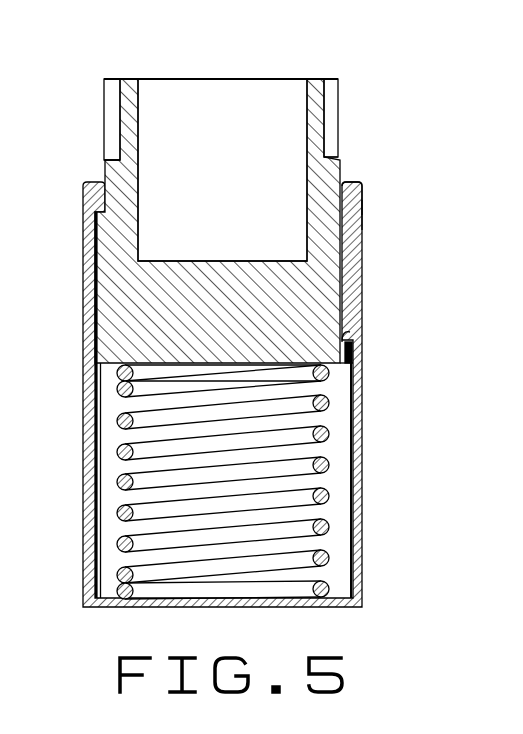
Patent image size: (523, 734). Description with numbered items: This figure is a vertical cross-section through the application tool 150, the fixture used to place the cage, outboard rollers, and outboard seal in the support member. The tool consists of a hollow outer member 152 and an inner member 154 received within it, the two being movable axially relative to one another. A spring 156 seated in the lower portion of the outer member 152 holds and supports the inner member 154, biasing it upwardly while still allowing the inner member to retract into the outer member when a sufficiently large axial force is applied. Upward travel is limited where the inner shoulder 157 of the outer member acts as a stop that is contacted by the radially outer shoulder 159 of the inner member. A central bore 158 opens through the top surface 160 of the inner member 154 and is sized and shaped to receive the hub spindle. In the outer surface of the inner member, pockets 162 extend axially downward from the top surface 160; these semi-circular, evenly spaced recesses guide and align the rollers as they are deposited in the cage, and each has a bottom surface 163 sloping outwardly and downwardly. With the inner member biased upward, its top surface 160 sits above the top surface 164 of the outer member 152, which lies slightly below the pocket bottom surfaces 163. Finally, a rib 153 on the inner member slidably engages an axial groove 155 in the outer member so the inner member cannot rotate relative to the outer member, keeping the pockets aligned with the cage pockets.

The application tool 150 is at (374, 211).
The outer member 152 is at (362, 270).
The rib 153 is at (84, 243).
The inner member 154 is at (314, 76).
The groove 155 is at (95, 417).
The spring 156 is at (297, 410).
The inner shoulder 157 is at (352, 364).
The central bore 158 is at (240, 105).
The radially outer shoulder 159 is at (350, 334).
The top surface 160 is at (126, 79).
The pockets 162 is at (110, 106).
The bottom surfaces 163 is at (107, 152).
The top surface 164 is at (345, 180).